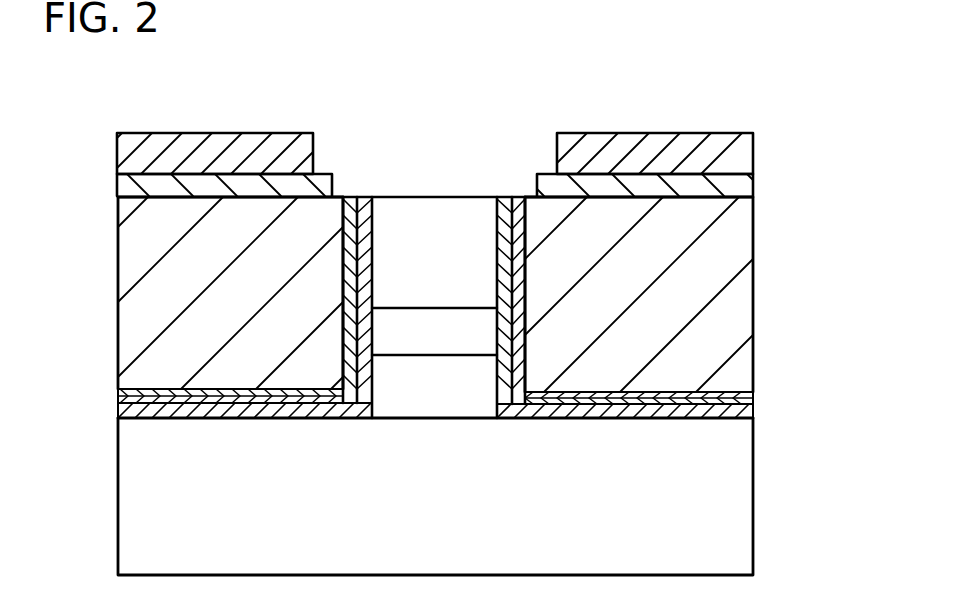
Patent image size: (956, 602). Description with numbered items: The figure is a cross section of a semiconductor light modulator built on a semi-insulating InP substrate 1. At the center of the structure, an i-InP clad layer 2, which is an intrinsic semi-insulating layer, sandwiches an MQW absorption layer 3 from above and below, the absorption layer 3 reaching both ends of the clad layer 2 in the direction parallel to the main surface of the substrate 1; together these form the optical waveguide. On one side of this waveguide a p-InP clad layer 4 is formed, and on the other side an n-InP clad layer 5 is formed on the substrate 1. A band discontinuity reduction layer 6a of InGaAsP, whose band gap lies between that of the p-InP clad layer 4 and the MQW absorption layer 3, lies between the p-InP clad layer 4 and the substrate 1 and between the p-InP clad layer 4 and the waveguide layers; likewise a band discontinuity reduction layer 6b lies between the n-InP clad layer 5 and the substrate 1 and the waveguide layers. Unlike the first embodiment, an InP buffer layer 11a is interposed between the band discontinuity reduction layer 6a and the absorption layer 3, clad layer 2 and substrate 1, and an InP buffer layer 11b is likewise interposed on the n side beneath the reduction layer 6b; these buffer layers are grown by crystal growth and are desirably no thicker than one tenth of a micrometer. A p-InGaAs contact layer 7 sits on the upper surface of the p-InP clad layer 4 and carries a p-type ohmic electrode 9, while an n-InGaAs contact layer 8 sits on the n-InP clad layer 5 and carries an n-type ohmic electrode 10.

The semi-insulating InP substrate 1 is at (680, 497).
The i-InP clad layer 2 is at (460, 258).
The MQW absorption layer 3 is at (460, 332).
The p-InP clad layer 4 is at (700, 278).
The n-InP clad layer 5 is at (170, 296).
The band discontinuity reduction layer 6a is at (735, 397).
The band discontinuity reduction layer 6b is at (130, 395).
The p-InGaAs contact layer 7 is at (730, 188).
The n-InGaAs contact layer 8 is at (145, 189).
The p-type ohmic electrode 9 is at (720, 156).
The n-type ohmic electrode 10 is at (145, 152).
The InP buffer layer 11a is at (735, 412).
The InP buffer layer 11b is at (130, 412).